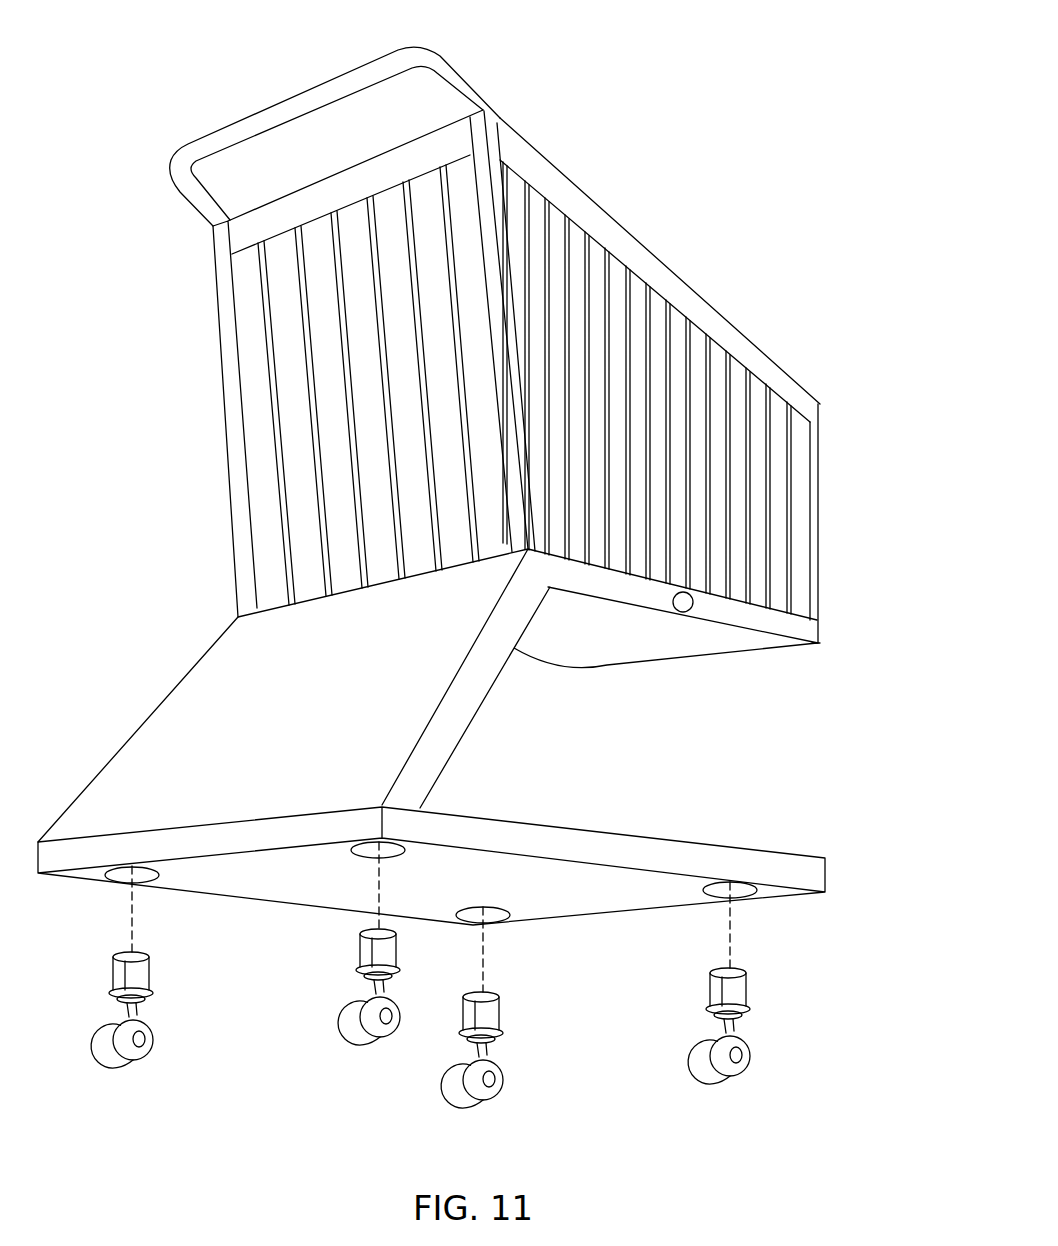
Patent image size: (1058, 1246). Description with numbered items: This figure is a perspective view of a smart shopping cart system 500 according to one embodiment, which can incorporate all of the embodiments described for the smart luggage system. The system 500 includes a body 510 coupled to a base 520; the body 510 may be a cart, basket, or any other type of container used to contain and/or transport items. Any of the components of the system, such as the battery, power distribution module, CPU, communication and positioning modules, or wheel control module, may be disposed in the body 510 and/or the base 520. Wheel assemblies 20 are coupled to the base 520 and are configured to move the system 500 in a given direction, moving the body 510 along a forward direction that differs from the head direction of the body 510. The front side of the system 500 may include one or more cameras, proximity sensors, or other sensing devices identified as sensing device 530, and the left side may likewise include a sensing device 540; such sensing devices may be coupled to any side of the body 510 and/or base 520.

The smart shopping cart system 500 is at (475, 581).
The body 510 is at (755, 349).
The base 520 is at (787, 868).
The sensing device 530 is at (822, 636).
The sensing device 540 is at (683, 602).
The wheel assemblies 20 is at (137, 1084).